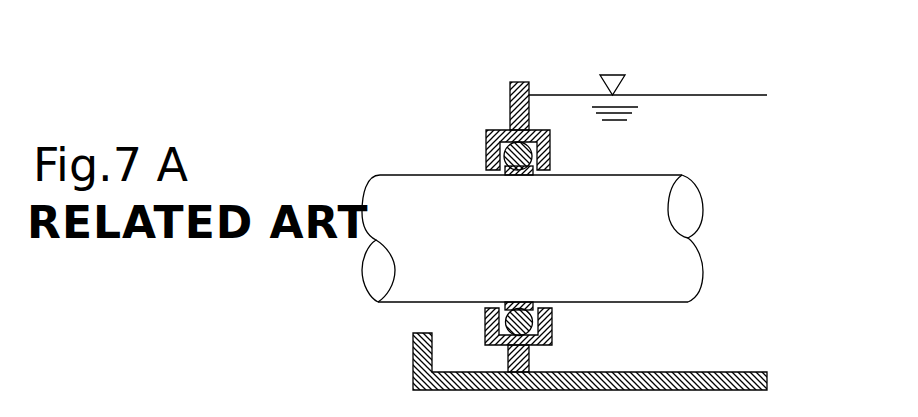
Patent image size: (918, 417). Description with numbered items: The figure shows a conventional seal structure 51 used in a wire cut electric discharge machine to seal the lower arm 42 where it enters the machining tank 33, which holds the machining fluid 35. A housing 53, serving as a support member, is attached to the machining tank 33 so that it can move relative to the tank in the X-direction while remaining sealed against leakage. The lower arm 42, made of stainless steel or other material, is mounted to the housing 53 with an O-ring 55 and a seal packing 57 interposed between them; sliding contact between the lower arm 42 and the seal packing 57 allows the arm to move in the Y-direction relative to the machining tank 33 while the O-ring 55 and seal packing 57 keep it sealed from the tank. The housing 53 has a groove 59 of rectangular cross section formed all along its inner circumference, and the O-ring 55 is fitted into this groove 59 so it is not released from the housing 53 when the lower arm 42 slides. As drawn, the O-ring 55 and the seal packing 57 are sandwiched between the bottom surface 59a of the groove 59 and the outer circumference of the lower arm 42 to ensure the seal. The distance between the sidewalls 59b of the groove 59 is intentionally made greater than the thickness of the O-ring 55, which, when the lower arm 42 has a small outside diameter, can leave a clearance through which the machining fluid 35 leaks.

The seal structure 51 is at (451, 90).
The machining tank 33 is at (518, 82).
The machining fluid 35 is at (678, 110).
The lower arm 42 is at (665, 177).
The housing 53 is at (475, 149).
The O-ring 55 is at (538, 133).
The seal packing 57 is at (520, 175).
The groove 59 is at (439, 139).
The bottom surface of the groove 59a is at (490, 143).
The sidewalls of the groove 59b is at (487, 157).